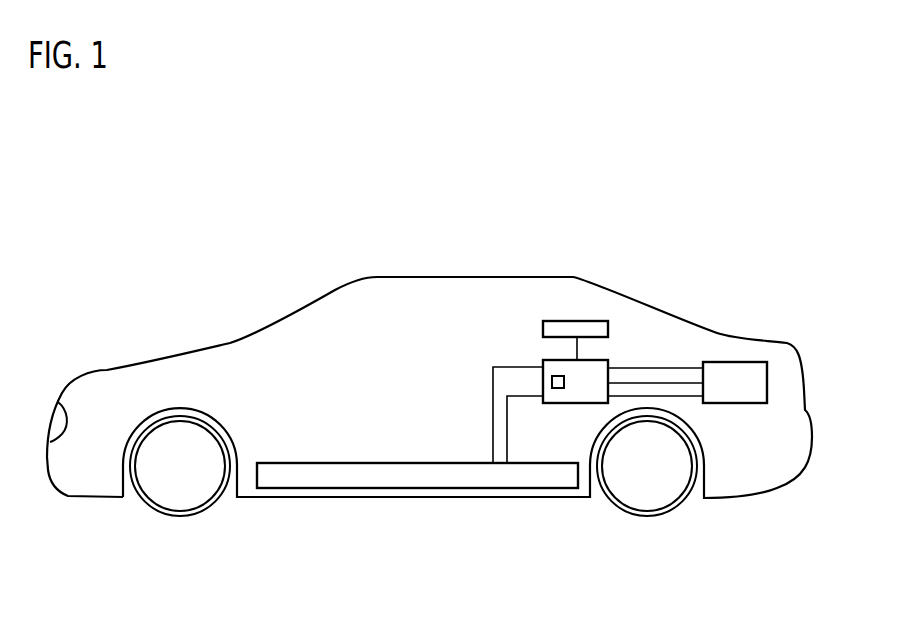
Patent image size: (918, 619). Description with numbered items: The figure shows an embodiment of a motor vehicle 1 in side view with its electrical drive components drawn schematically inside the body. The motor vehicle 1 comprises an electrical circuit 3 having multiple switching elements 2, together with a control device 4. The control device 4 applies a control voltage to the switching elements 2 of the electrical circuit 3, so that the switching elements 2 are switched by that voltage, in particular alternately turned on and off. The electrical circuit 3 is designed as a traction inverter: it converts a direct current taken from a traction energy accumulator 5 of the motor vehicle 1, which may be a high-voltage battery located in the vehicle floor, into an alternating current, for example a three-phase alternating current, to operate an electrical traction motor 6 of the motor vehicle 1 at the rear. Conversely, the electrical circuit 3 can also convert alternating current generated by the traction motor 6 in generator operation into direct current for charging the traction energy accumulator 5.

The motor vehicle 1 is at (709, 258).
The switching elements 2 is at (551, 376).
The electrical circuit 3 is at (592, 404).
The control device 4 is at (577, 320).
The traction energy accumulator 5 is at (357, 489).
The traction motor 6 is at (747, 370).